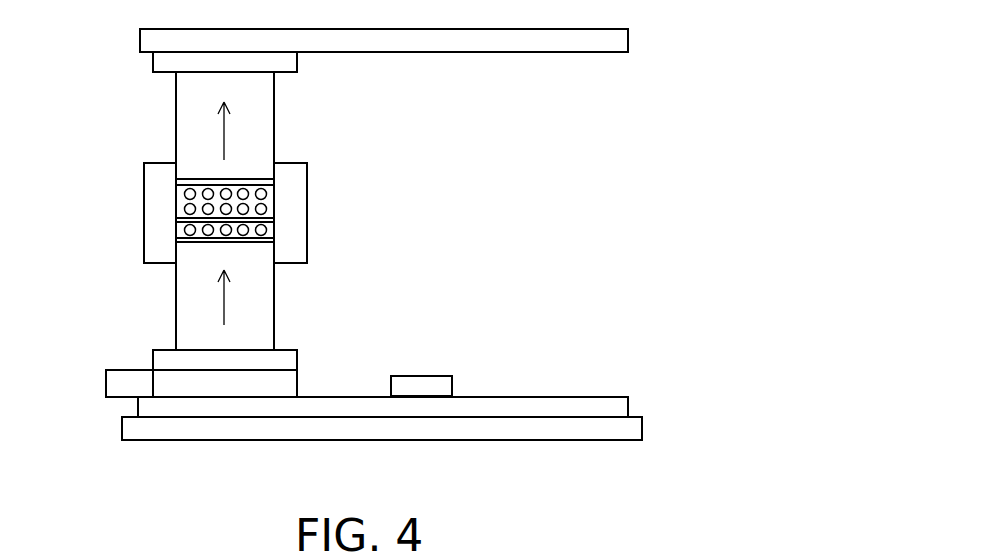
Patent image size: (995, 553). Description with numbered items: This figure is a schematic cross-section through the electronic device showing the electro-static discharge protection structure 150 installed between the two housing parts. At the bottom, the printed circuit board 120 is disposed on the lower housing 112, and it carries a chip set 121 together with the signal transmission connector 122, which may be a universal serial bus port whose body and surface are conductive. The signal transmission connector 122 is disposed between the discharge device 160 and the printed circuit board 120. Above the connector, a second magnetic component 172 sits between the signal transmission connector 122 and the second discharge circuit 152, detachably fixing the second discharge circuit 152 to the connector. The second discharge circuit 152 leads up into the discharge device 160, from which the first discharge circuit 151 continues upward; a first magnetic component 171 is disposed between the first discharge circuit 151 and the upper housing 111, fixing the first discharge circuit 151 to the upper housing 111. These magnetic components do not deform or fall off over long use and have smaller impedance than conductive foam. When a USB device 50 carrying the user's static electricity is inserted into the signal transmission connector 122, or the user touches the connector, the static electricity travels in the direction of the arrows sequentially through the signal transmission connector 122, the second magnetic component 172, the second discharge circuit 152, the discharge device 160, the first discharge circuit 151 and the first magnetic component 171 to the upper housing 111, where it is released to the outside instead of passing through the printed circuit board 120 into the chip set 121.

The upper housing 111 is at (148, 37).
The first magnetic component 171 is at (160, 58).
The first discharge circuit 151 is at (183, 98).
The discharge device 160 is at (143, 225).
The electro-static discharge protection structure 150 is at (337, 210).
The second discharge circuit 152 is at (188, 302).
The second magnetic component 172 is at (167, 358).
The signal transmission connector 122 is at (283, 380).
The USB device 50 is at (120, 385).
The chip set 121 is at (430, 382).
The printed circuit board 120 is at (147, 407).
The lower housing 112 is at (132, 430).